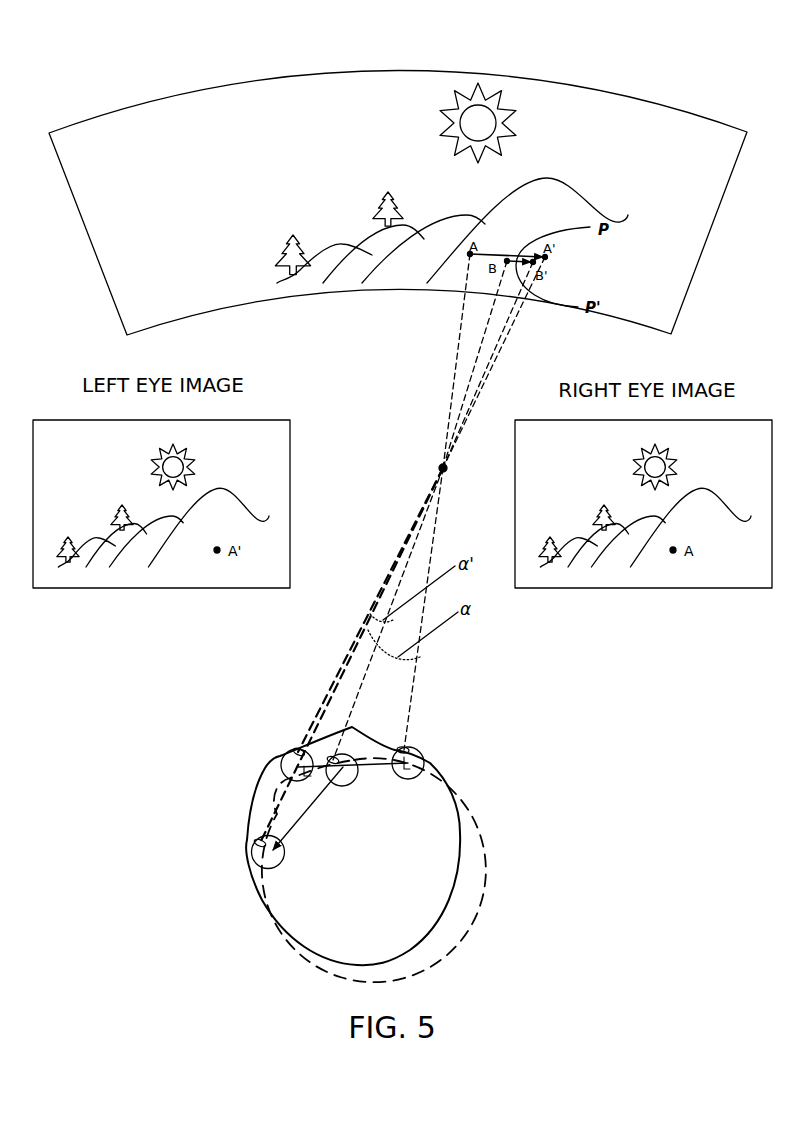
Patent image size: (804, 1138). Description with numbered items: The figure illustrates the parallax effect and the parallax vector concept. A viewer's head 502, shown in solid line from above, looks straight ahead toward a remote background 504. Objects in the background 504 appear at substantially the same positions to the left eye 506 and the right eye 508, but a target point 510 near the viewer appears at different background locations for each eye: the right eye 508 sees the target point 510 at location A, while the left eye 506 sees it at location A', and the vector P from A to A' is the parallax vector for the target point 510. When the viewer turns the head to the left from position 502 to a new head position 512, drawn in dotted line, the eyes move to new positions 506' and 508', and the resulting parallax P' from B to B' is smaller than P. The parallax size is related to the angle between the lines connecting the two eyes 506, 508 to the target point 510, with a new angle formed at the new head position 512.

The viewer's head 502 is at (460, 832).
The remote background 504 is at (241, 75).
The left eye 506 is at (269, 726).
The left eye at new position 506' is at (230, 838).
The right eye 508 is at (446, 730).
The right eye at new position 508' is at (370, 736).
The target point 510 is at (438, 467).
The new head position 512 is at (495, 893).